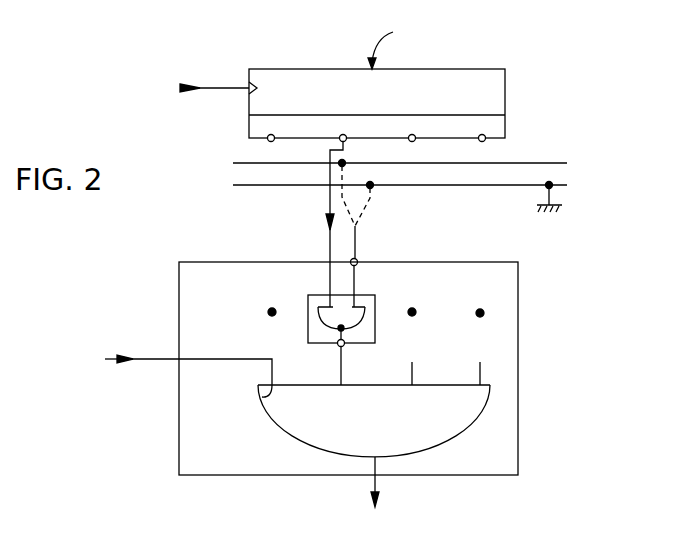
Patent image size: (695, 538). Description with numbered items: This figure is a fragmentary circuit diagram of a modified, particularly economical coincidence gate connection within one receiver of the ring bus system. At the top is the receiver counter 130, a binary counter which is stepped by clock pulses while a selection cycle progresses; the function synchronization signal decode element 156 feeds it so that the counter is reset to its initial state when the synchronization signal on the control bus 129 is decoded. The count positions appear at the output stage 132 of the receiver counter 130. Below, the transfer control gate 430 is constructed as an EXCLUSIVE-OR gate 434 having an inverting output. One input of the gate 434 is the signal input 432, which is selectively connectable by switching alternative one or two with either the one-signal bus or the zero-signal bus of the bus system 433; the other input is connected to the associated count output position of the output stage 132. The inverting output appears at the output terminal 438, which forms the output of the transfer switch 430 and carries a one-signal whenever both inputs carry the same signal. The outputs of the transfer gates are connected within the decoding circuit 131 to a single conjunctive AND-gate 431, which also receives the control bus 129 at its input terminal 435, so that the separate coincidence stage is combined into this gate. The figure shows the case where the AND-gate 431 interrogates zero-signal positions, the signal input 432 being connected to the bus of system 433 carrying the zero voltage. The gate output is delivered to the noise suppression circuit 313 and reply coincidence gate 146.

The receiver counter 130 is at (270, 73).
The function synchronization signal decode element 156 is at (194, 88).
The output stage 132 is at (258, 125).
The bus system 433 is at (587, 157).
The signal input 432 is at (358, 260).
The decoding circuit 131 is at (192, 275).
The transfer control gate 430 is at (365, 335).
The EXCLUSIVE-OR gate 434 is at (322, 313).
The output terminal 438 is at (338, 347).
The control bus 129 is at (167, 366).
The AND-gate 431 is at (277, 427).
The input terminal 435 is at (263, 400).
The reply coincidence gate 146 is at (392, 494).
The noise suppression circuit 313 is at (392, 494).